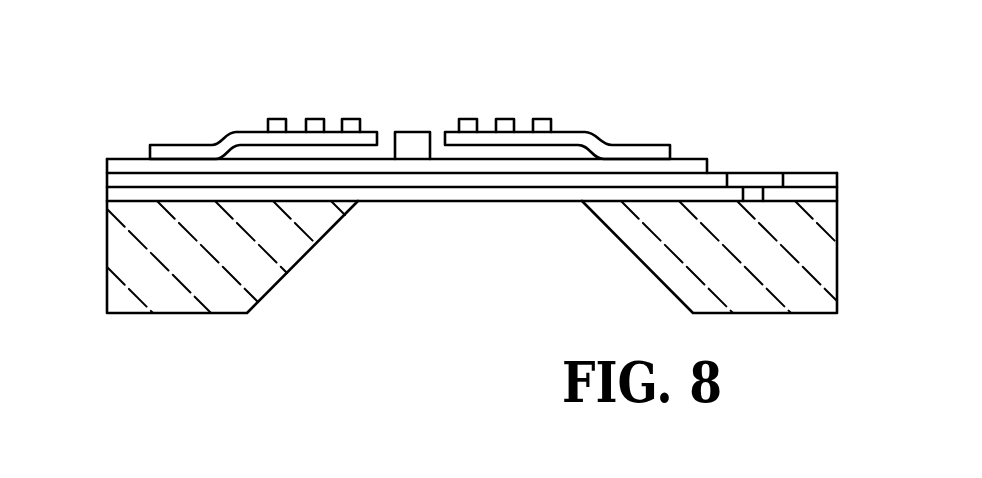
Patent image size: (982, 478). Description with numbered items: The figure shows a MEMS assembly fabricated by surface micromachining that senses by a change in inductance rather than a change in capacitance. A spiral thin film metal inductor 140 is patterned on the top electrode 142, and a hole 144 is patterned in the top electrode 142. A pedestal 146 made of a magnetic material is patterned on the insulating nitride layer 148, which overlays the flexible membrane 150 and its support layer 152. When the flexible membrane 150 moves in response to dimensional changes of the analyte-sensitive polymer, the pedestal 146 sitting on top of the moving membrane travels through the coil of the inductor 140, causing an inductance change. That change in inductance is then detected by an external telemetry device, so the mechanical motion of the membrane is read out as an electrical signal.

The spiral thin film metal inductor 140 is at (475, 118).
The top electrode 142 is at (622, 143).
The hole 144 is at (387, 140).
The pedestal 146 is at (415, 131).
The insulating nitride layer 148 is at (695, 158).
The flexible membrane 150 is at (465, 203).
The support layer 152 is at (817, 172).